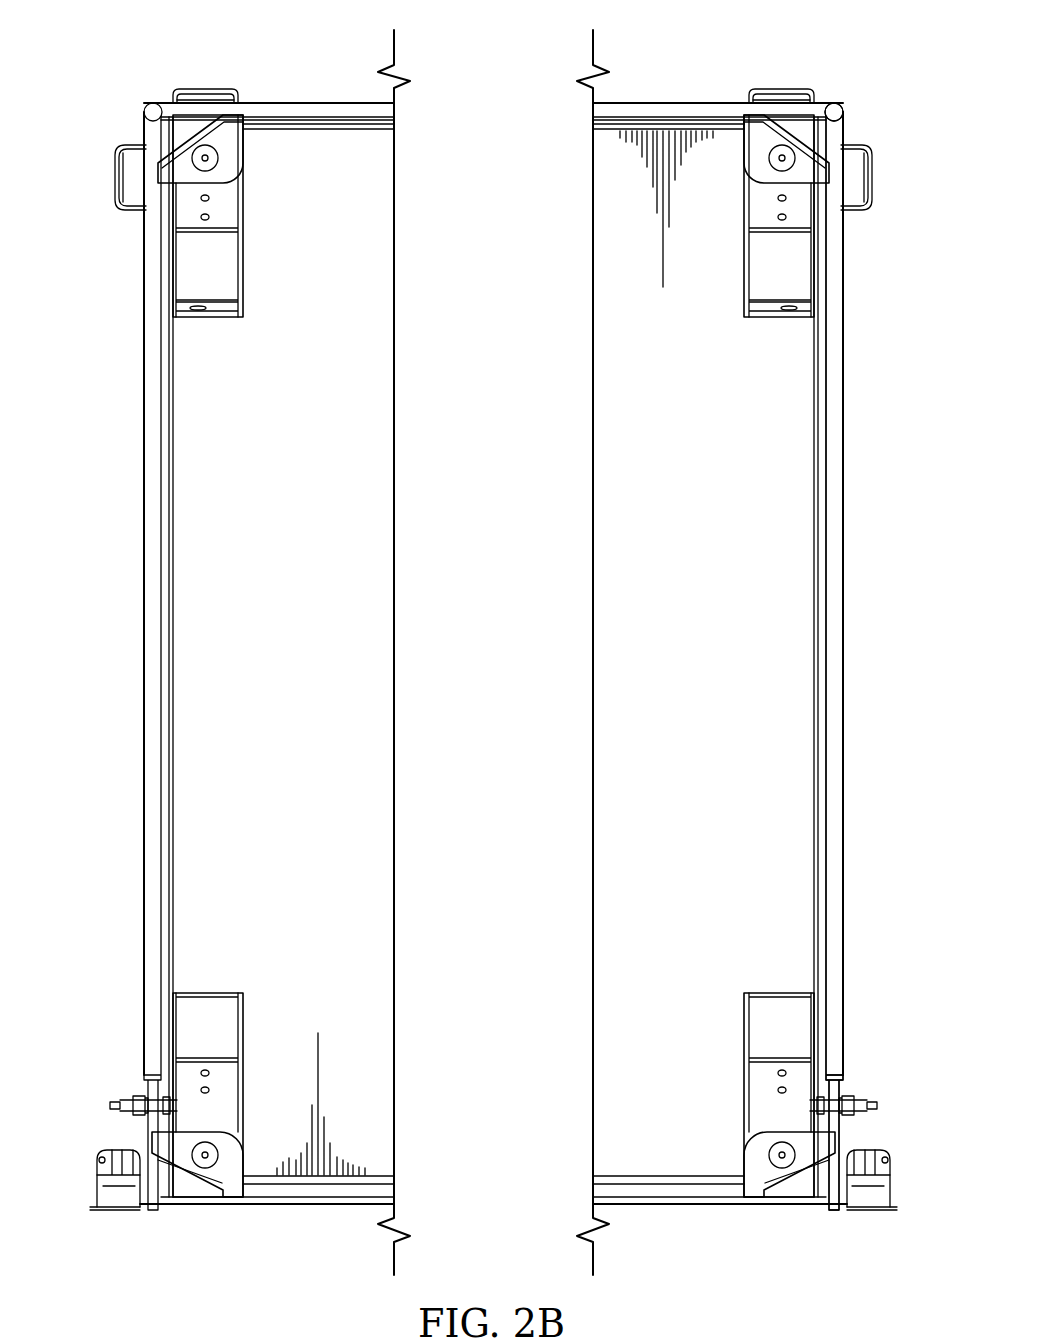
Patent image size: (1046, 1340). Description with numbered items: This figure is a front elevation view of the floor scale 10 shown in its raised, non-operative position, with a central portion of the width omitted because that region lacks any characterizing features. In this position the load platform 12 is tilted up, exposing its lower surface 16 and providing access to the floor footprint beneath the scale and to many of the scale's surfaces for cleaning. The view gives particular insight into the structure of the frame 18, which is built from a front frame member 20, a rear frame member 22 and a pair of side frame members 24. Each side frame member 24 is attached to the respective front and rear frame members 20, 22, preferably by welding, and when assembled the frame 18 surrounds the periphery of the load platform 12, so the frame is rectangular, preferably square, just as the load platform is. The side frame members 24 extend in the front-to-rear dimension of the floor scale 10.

The floor scale 10 is at (722, 60).
The load platform 12 is at (795, 596).
The lower surface 16 is at (295, 669).
The frame 18 is at (855, 793).
The front frame member 20 is at (311, 102).
The rear frame member 22 is at (709, 1206).
The side frame members 24 is at (153, 602).